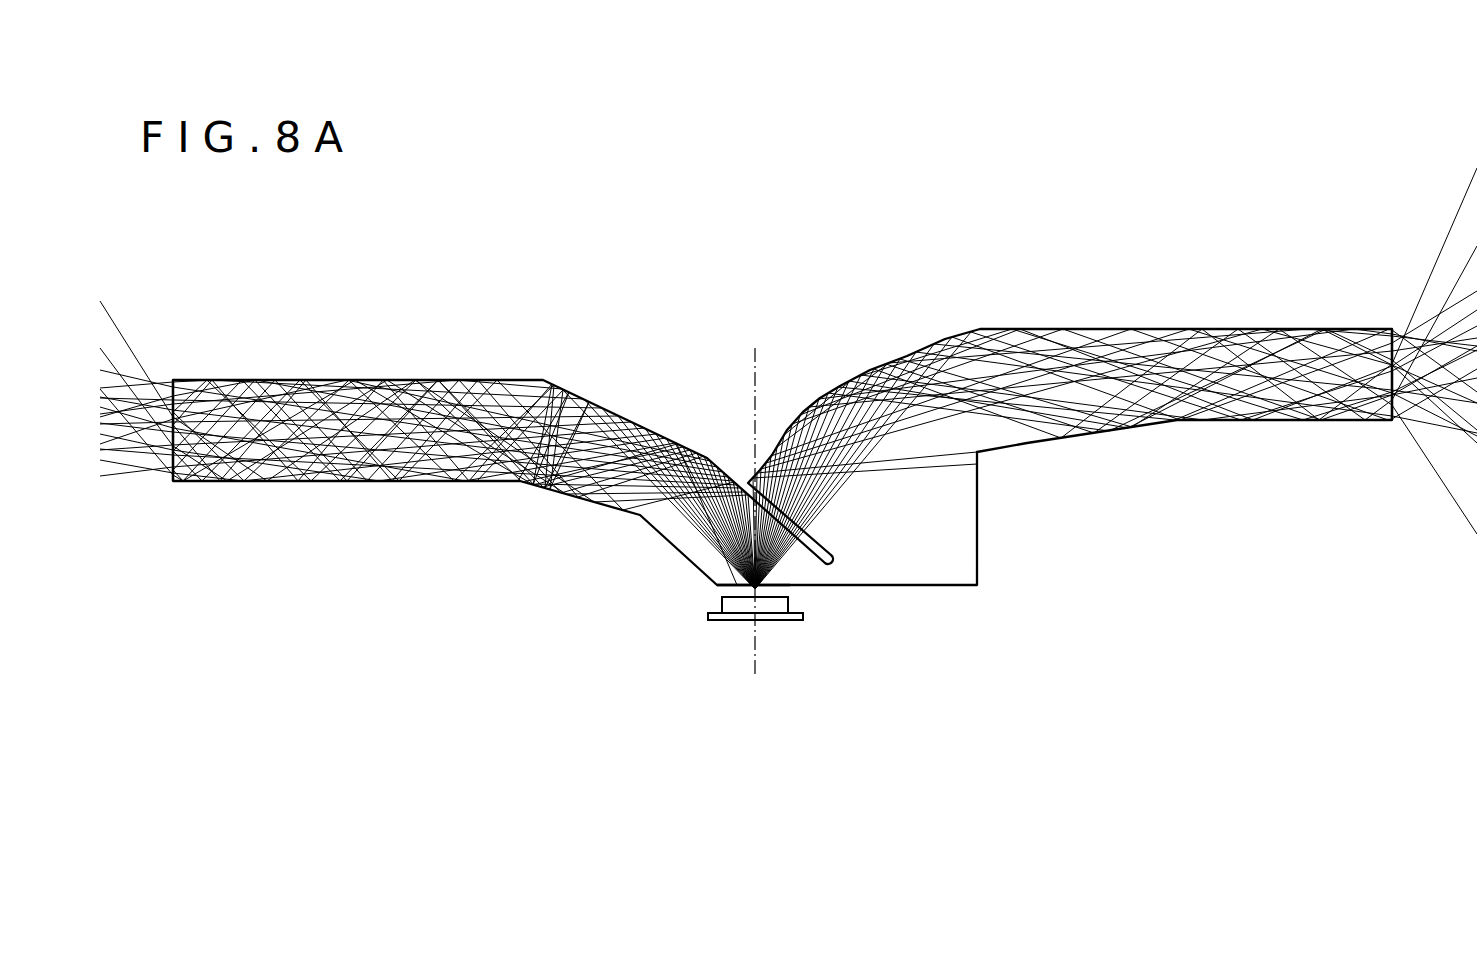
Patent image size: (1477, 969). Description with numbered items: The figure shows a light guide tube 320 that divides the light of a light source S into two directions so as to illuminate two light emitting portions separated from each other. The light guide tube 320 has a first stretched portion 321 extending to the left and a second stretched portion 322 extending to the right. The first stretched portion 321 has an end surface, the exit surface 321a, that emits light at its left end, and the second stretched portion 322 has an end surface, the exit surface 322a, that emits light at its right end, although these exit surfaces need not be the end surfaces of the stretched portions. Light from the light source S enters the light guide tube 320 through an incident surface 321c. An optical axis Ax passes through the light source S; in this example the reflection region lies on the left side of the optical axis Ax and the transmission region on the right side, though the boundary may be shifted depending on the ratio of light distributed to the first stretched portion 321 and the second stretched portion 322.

The light guide tube 320 is at (979, 297).
The first stretched portion 321 is at (488, 380).
The exit surface 321a is at (158, 455).
The incident surface 321c is at (720, 590).
The second stretched portion 322 is at (1268, 329).
The exit surface 322a is at (1400, 377).
The light source S is at (782, 602).
The optical axis Ax is at (761, 529).